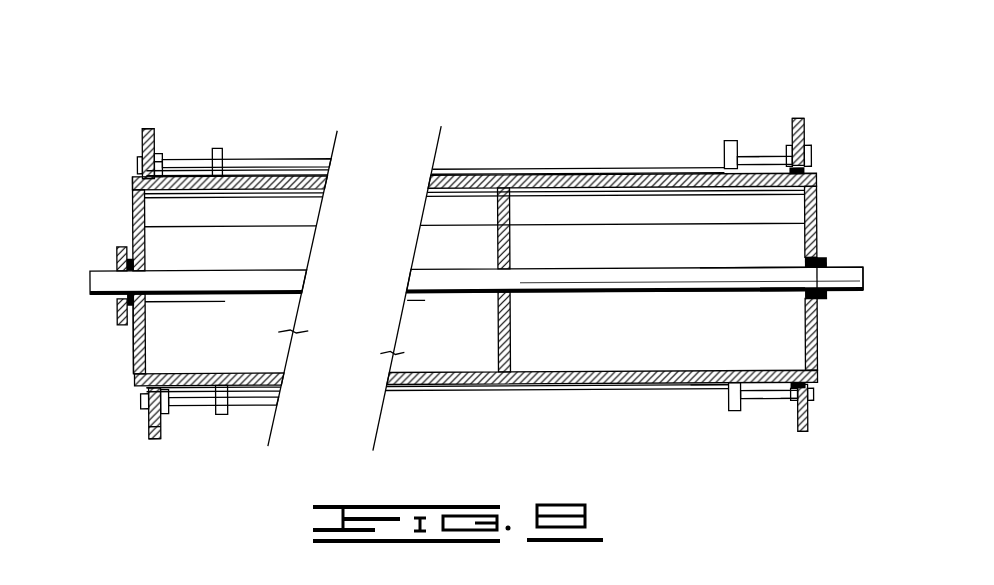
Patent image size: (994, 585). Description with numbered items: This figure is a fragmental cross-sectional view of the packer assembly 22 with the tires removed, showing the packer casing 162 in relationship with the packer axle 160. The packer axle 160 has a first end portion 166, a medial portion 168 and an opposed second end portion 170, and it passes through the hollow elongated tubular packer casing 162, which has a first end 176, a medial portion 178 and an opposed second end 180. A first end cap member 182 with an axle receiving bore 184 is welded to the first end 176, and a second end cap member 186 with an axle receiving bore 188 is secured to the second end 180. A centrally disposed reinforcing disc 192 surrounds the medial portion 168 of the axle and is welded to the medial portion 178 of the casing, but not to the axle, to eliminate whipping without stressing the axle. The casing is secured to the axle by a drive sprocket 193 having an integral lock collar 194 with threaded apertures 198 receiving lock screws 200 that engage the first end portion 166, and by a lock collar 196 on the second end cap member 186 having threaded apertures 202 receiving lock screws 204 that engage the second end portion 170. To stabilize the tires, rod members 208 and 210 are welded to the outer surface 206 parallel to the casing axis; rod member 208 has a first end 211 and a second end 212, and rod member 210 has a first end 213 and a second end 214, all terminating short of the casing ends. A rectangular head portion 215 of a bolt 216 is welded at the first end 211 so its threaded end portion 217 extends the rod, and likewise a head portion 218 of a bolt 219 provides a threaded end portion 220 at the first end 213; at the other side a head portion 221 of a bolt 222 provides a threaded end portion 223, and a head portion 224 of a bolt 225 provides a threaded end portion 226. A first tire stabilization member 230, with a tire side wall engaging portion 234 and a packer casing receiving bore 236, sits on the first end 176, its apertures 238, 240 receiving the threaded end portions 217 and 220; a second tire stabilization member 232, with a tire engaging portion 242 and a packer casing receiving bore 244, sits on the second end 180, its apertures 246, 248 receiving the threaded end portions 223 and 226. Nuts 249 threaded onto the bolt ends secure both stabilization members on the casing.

The packer assembly 22 is at (732, 46).
The packer axle 160 is at (722, 268).
The packer casing 162 is at (592, 170).
The first end portion 166 is at (101, 280).
The medial portion 168 is at (546, 292).
The opposed second end portion 170 is at (863, 279).
The first end 176 is at (172, 192).
The medial portion 178 is at (545, 175).
The opposed second end 180 is at (817, 177).
The first end cap member 182 is at (133, 336).
The axle receiving bore 184 is at (148, 268).
The second end cap member 186 is at (814, 224).
The axle receiving bore 188 is at (792, 292).
The reinforcing disc 192 is at (511, 245).
The drive sprocket 193 is at (120, 245).
The lock collar 194 is at (120, 306).
The lock collar 196 is at (822, 270).
The threaded apertures 198 is at (128, 262).
The lock screw 200 is at (138, 235).
The threaded apertures 202 is at (807, 265).
The lock screw 204 is at (818, 262).
The outer surface 206 is at (465, 168).
The rod member 208 is at (660, 168).
The rod member 210 is at (645, 391).
The first end 211 is at (228, 171).
The opposed second end 212 is at (716, 172).
The first end 213 is at (245, 390).
The second end 214 is at (716, 385).
The head portion 215 is at (224, 150).
The bolt 216 is at (189, 157).
The threaded end portion 217 is at (158, 152).
The head portion 218 is at (222, 413).
The bolt 219 is at (205, 405).
The threaded end portion 220 is at (175, 405).
The head portion 221 is at (735, 142).
The bolt 222 is at (748, 156).
The threaded end portion 223 is at (766, 158).
The head portion 224 is at (728, 406).
The bolt 225 is at (768, 402).
The threaded end portion 226 is at (790, 401).
The first tire stabilization member 230 is at (141, 130).
The second tire stabilization member 232 is at (807, 127).
The tire side wall engaging portion 234 is at (150, 127).
The packer casing receiving bore 236 is at (133, 181).
The aperture 238 is at (156, 160).
The aperture 240 is at (148, 418).
The tire engaging portion 242 is at (800, 120).
The packer casing receiving bore 244 is at (798, 176).
The aperture 246 is at (812, 166).
The aperture 248 is at (814, 395).
The nuts 249 is at (140, 163).